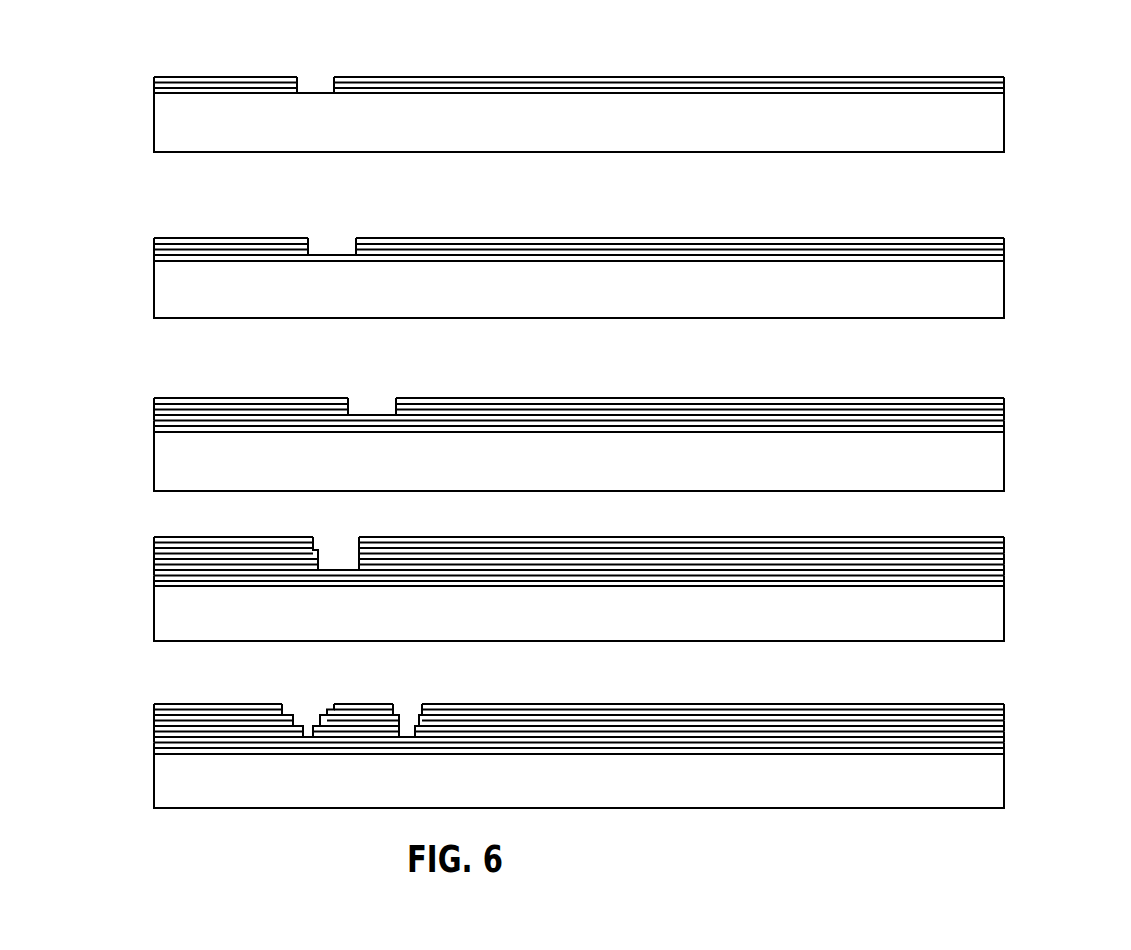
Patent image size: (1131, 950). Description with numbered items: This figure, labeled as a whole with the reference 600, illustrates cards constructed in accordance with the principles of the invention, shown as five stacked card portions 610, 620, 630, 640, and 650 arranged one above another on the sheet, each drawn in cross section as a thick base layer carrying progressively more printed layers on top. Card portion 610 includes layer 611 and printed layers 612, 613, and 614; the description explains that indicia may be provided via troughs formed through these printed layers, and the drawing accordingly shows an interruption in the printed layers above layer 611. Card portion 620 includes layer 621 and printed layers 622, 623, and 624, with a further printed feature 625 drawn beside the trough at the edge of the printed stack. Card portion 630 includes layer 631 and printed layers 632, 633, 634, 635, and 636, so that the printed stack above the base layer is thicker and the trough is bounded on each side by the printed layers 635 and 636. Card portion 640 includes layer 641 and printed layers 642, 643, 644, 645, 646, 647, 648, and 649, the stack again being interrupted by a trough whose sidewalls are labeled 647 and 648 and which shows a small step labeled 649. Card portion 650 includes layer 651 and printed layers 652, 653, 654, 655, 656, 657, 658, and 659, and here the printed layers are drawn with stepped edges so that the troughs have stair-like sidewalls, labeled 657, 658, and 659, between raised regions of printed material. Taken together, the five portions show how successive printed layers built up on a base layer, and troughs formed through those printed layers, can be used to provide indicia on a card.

The process flow for forming layered structure 600 is at (1043, 386).
The card portion 610 is at (192, 48).
The layer 611 is at (154, 150).
The printed layer 612 is at (154, 89).
The printed layer 613 is at (154, 78).
The printed layer 614 is at (360, 77).
The card portion 620 is at (178, 214).
The layer 621 is at (154, 315).
The printed layer 622 is at (154, 254).
The printed layer 623 is at (154, 240).
The printed layer 624 is at (305, 238).
The second sidewall of opening 625 is at (356, 249).
The card portion 630 is at (178, 377).
The layer 631 is at (154, 489).
The printed layer 632 is at (154, 428).
The printed layer 633 is at (154, 414).
The printed layer 634 is at (154, 416).
The printed layer 635 is at (346, 398).
The printed layer 636 is at (396, 409).
The card portion 640 is at (173, 517).
The layer 641 is at (154, 639).
The printed layer 642 is at (155, 579).
The printed layer 643 is at (155, 570).
The printed layer 644 is at (155, 565).
The printed layer 645 is at (155, 560).
The printed layer 646 is at (155, 556).
The printed layer 647 is at (307, 536).
The printed layer 648 is at (359, 548).
The printed layer 649 is at (335, 563).
The card portion 650 is at (178, 682).
The layer 651 is at (154, 806).
The printed layer 652 is at (155, 747).
The printed layer 653 is at (155, 737).
The printed layer 654 is at (155, 731).
The printed layer 655 is at (155, 726).
The printed layer 656 is at (155, 722).
The printed layer 657 is at (280, 703).
The printed layer 658 is at (292, 719).
The printed layer 659 is at (330, 714).